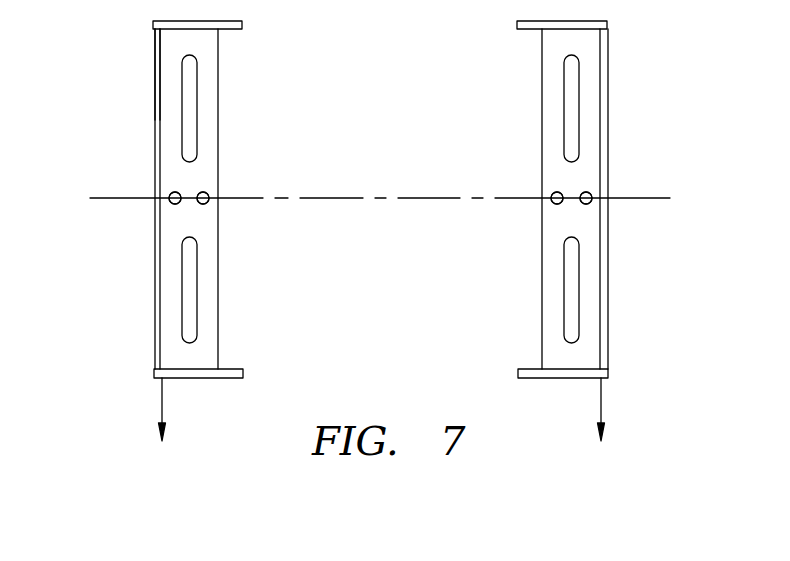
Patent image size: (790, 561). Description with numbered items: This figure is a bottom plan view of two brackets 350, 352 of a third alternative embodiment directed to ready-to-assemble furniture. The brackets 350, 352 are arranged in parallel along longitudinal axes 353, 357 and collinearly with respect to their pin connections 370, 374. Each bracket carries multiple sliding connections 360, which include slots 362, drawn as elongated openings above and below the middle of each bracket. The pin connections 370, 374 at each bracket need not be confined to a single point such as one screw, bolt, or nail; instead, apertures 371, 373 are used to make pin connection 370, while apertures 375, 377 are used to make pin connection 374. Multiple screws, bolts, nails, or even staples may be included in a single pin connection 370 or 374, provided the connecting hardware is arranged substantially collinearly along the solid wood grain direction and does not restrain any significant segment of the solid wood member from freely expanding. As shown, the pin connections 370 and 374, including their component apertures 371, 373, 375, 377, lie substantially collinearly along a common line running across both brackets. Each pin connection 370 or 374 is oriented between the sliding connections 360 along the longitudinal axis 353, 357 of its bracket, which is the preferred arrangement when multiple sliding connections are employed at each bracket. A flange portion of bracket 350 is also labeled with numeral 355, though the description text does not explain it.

The bracket 350 is at (153, 149).
The bracket 352 is at (608, 148).
The longitudinal axis 353 is at (600, 401).
The flange of first bracket 355 is at (172, 30).
The longitudinal axis 357 is at (161, 401).
The sliding connection 360 is at (206, 56).
The slot 362 is at (196, 105).
The pin connection 370 is at (193, 210).
The aperture 371 is at (180, 194).
The aperture 373 is at (209, 204).
The pin connection 374 is at (571, 212).
The aperture 375 is at (552, 204).
The aperture 377 is at (580, 192).